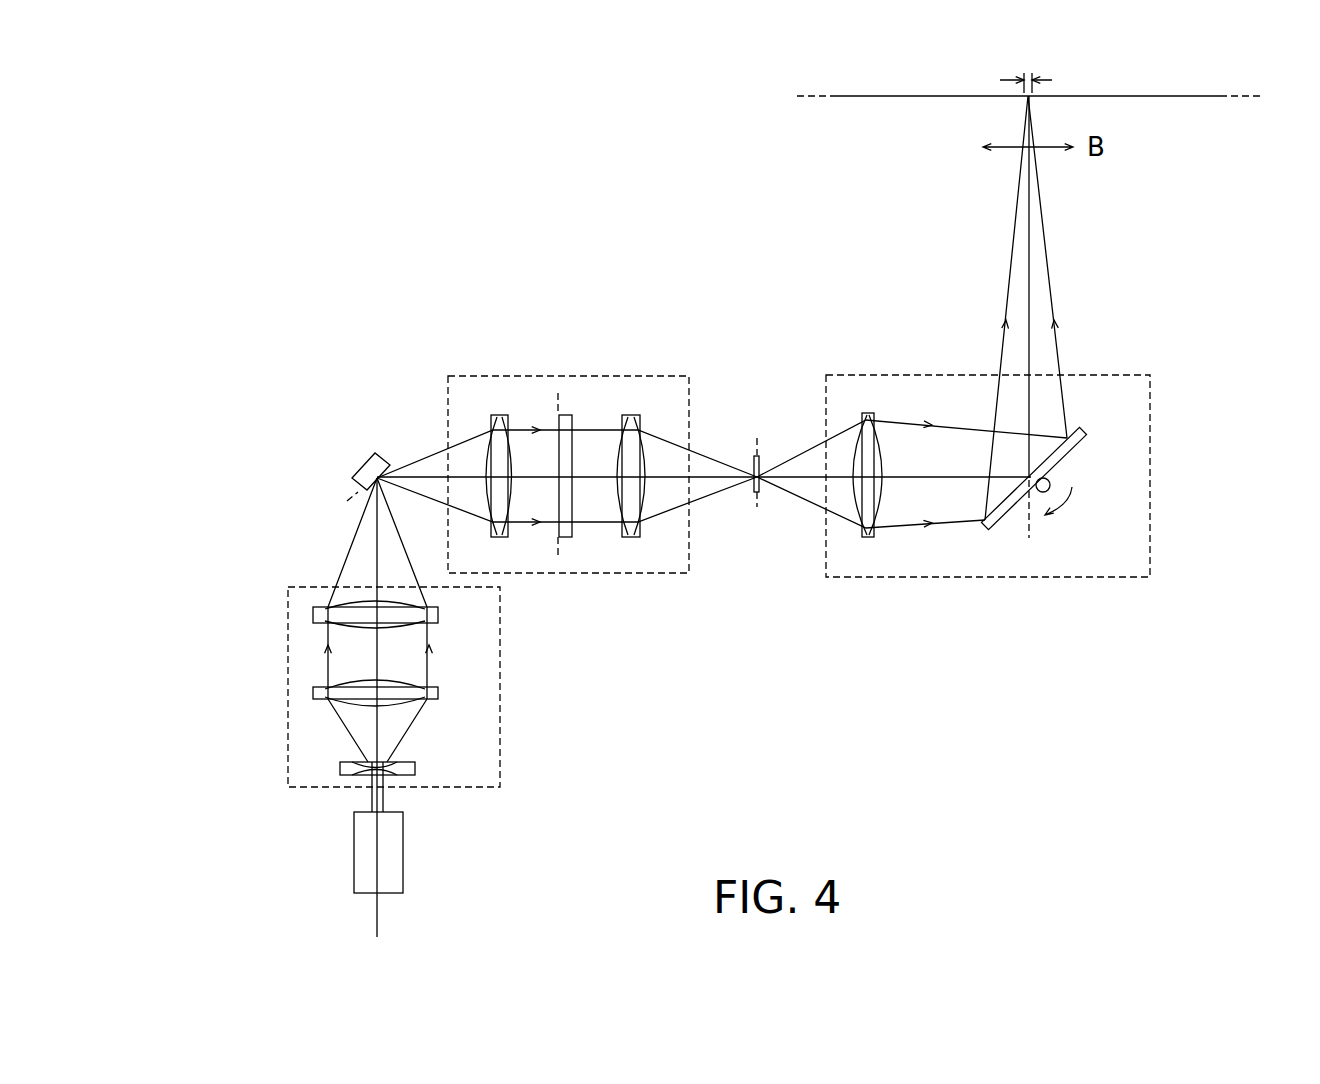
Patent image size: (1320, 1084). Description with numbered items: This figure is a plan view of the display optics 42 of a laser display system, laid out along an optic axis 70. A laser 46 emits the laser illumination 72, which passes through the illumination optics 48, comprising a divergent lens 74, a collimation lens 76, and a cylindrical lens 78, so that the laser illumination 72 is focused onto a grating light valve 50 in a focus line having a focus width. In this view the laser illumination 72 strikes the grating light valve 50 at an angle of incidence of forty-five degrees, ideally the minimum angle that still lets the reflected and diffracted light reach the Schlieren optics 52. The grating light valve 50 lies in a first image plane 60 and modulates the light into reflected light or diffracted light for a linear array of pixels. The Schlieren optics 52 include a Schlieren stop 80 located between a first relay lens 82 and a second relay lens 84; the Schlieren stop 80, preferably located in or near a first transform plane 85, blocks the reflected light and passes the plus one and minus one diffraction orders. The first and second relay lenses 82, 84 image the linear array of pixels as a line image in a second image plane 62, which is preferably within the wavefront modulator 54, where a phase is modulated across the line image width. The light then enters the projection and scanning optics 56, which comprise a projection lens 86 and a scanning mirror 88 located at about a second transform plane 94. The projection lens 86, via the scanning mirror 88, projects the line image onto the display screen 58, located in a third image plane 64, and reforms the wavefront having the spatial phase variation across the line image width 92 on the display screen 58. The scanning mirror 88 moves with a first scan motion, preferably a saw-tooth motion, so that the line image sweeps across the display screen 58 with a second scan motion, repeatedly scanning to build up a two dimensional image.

The display optics 42 is at (421, 316).
The laser 46 is at (403, 852).
The illumination optics 48 is at (288, 677).
The grating light valve 50 is at (352, 466).
The Schlieren optics 52 is at (555, 376).
The wavefront modulator 54 is at (754, 457).
The projection and scanning optics 56 is at (943, 375).
The display screen 58 is at (910, 96).
The first image plane 60 is at (396, 451).
The second image plane 62 is at (757, 506).
The third image plane 64 is at (797, 96).
The optic axis 70 is at (948, 476).
The laser illumination 72 is at (347, 553).
The divergent lens 74 is at (415, 772).
The collimation lens 76 is at (438, 693).
The cylindrical lens 78 is at (438, 612).
The Schlieren stop 80 is at (567, 414).
The first relay lens 82 is at (500, 414).
The second relay lens 84 is at (633, 414).
The first transform plane 85 is at (556, 547).
The projection lens 86 is at (872, 413).
The scanning mirror 88 is at (1075, 428).
The line image width 92 is at (1047, 80).
The second transform plane 94 is at (1029, 533).